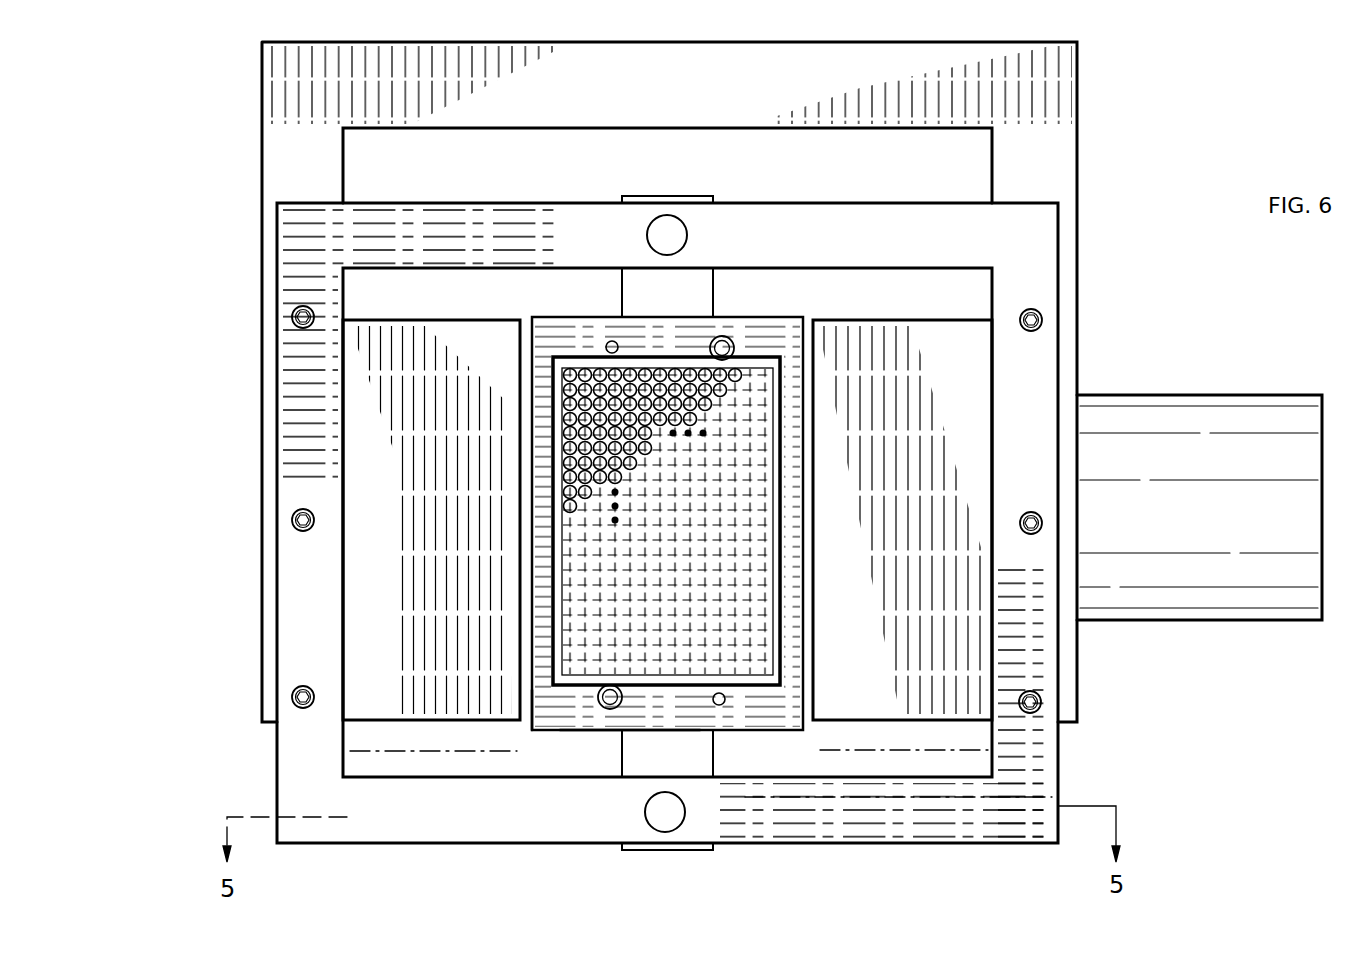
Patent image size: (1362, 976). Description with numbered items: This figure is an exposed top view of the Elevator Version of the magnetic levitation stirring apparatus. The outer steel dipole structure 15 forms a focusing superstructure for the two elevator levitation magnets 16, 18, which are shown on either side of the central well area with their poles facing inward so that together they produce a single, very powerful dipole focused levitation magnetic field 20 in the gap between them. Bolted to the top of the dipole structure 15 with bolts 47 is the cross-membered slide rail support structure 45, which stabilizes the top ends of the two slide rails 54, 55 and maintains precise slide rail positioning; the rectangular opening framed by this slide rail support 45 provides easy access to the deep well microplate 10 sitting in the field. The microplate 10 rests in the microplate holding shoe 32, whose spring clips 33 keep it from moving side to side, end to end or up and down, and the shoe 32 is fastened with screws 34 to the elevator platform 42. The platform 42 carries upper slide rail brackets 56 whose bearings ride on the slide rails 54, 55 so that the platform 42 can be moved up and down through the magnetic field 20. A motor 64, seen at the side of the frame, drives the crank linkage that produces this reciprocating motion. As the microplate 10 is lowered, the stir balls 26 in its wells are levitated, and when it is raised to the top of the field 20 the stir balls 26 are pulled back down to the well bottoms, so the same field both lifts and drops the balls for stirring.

The deep well microplate 10 is at (766, 640).
The steel dipole structure 15 is at (1058, 63).
The elevator levitation magnet 16 is at (432, 352).
The elevator levitation magnet 18 is at (913, 342).
The dipole focused levitation magnetic field 20 is at (808, 718).
The stir balls 26 is at (566, 393).
The microplate holding shoe 32 is at (543, 693).
The spring clips 33 is at (735, 344).
The screws 34 is at (611, 343).
The elevator platform 42 is at (608, 730).
The slide rail support structure 45 is at (1050, 372).
The bolts 47 is at (291, 316).
The slide rail 54 is at (673, 822).
The slide rail 55 is at (668, 230).
The upper slide rail bracket 56 is at (632, 286).
The motor 64 is at (1275, 404).